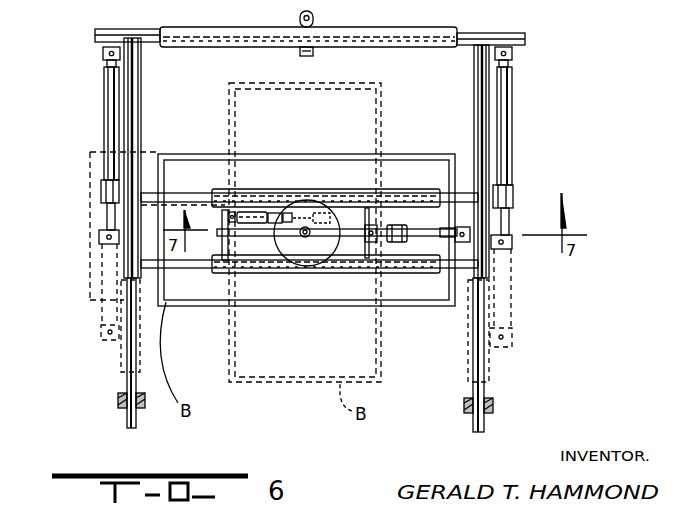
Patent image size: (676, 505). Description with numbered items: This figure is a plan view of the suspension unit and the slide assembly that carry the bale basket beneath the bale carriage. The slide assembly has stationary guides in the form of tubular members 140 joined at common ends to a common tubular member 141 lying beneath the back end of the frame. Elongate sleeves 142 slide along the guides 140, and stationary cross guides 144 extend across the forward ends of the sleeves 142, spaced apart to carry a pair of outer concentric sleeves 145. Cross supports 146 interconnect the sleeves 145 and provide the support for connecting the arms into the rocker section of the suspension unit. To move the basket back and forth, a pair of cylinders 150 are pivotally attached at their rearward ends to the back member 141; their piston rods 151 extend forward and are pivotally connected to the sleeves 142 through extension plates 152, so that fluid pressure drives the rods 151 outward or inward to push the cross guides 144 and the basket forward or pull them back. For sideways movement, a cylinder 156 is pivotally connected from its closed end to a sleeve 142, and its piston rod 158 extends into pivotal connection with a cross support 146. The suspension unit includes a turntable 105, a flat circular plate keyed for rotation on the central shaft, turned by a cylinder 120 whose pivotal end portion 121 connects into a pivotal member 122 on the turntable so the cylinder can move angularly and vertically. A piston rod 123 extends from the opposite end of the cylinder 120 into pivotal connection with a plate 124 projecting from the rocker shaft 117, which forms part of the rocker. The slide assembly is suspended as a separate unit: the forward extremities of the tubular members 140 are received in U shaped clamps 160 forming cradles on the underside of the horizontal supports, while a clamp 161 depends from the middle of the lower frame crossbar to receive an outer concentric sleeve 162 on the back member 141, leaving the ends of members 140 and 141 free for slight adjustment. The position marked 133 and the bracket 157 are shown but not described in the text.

The turntable 105 is at (285, 252).
The rocker shaft 117 is at (213, 258).
The cylinder 120 is at (245, 211).
The pivotal end portion 121 is at (288, 212).
The pivotal member 122 is at (294, 213).
The piston rod 123 is at (273, 213).
The plate 124 is at (232, 236).
The support position 133 is at (524, 343).
The tubular members 140 is at (126, 382).
The common tubular member 141 is at (489, 32).
The elongate sleeves 142 is at (130, 109).
The cross guides 144 is at (172, 193).
The outer concentric sleeves 145 is at (224, 192).
The cross supports 146 is at (228, 222).
The cylinders 150 is at (104, 80).
The piston rods 151 is at (105, 207).
The extension plates 152 is at (99, 239).
The cylinder 156 is at (445, 240).
The bracket 157 is at (453, 230).
The piston rod 158 is at (390, 226).
The U shaped clamps 160 is at (118, 403).
The clamp 161 is at (314, 16).
The outer concentric sleeve 162 is at (213, 28).